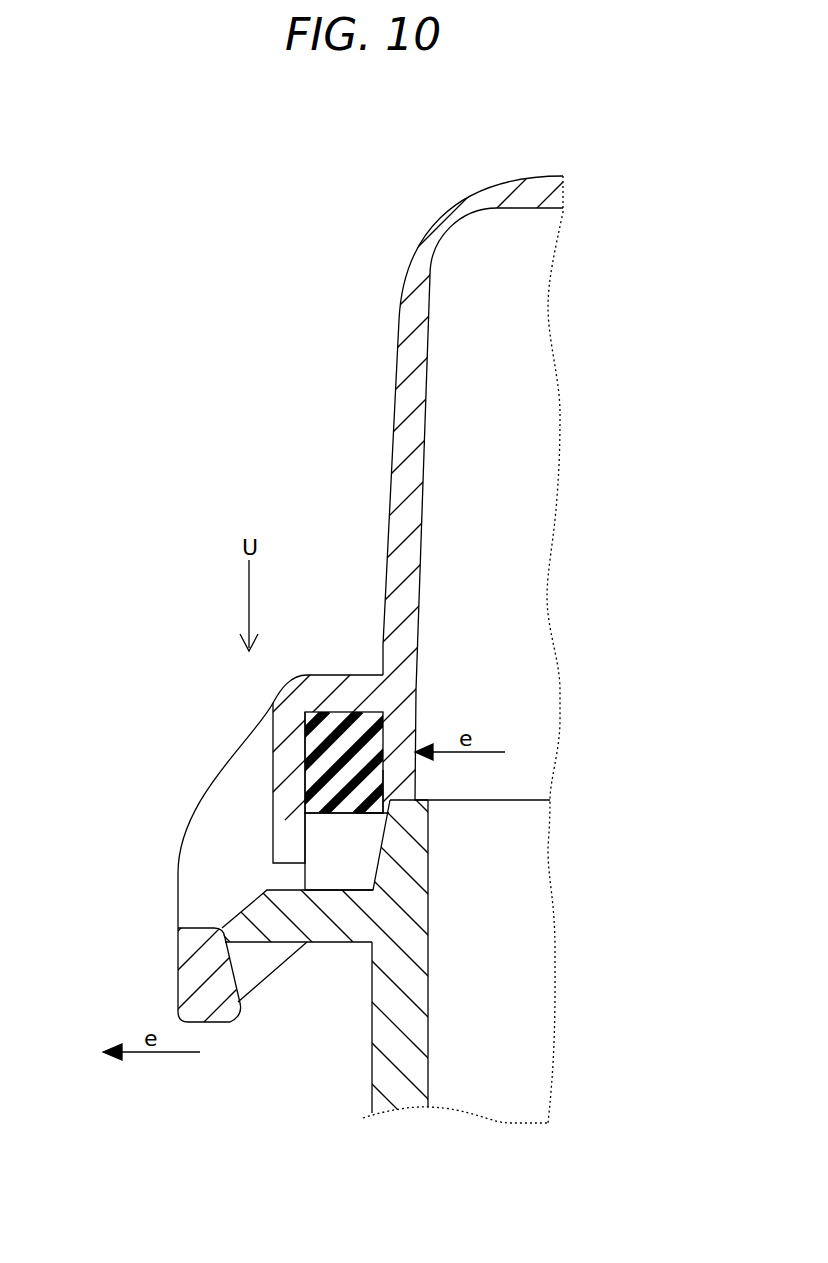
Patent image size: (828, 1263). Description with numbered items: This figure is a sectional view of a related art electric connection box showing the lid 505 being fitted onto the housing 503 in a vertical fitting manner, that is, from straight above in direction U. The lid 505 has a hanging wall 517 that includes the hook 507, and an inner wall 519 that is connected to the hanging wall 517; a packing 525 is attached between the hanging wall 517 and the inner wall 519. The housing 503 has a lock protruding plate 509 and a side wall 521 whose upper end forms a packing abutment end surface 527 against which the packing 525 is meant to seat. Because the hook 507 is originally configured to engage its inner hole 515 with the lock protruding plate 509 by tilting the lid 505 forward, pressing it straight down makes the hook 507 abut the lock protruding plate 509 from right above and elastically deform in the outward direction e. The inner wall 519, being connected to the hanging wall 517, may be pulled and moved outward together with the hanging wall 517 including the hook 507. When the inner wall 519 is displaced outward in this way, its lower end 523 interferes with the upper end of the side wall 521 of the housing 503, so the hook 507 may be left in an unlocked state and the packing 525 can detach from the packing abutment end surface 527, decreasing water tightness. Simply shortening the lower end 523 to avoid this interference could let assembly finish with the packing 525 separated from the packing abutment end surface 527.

The housing 503 is at (478, 1125).
The lid 505 is at (437, 212).
The hook 507 is at (220, 774).
The lock protruding plate 509 is at (300, 906).
The inner hole 515 is at (198, 927).
The hanging wall 517 is at (272, 760).
The inner wall 519 is at (386, 752).
The side wall 521 is at (412, 1090).
The lower end 523 is at (380, 770).
The packing 525 is at (345, 711).
The packing abutment end surface 527 is at (378, 770).